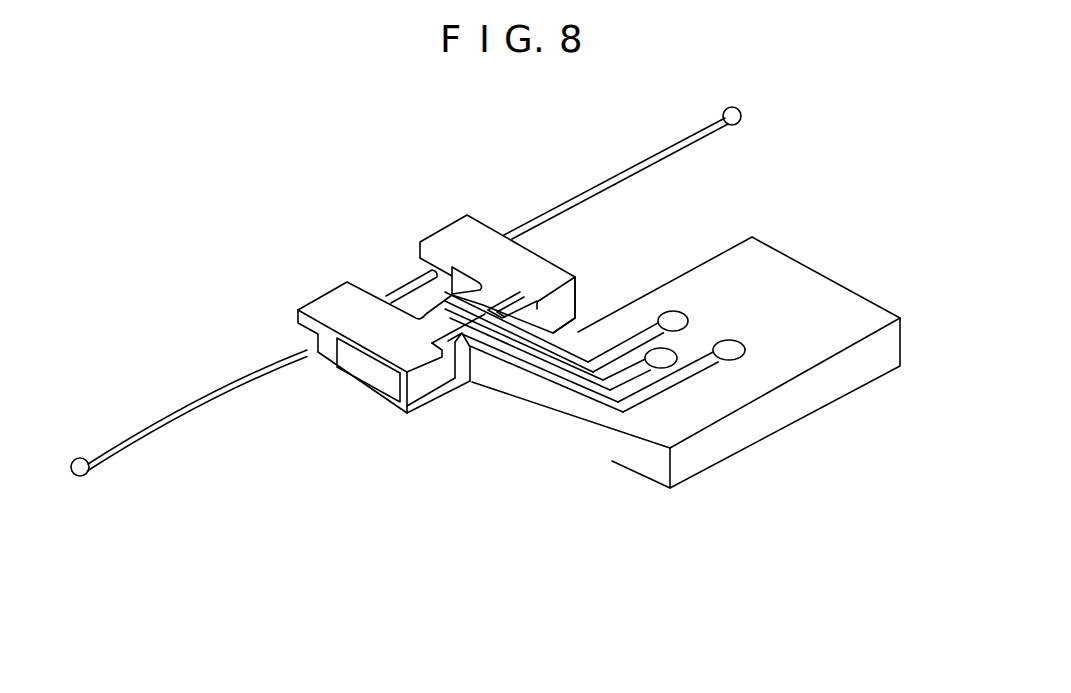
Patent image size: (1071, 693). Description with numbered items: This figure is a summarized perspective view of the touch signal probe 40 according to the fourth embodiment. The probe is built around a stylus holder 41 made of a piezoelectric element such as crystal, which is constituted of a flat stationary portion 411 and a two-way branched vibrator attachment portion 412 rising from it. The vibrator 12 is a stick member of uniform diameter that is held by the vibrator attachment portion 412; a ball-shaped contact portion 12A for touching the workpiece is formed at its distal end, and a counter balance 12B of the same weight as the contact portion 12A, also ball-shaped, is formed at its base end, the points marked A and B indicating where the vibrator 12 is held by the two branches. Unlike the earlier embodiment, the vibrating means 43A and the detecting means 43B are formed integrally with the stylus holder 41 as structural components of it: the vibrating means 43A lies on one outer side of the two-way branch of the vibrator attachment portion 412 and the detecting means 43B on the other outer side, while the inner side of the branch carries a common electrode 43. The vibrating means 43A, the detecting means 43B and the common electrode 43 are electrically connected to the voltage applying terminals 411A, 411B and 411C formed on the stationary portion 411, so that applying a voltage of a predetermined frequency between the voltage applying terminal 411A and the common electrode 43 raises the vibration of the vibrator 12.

The touch signal probe 40 is at (165, 150).
The stylus holder 41 is at (463, 505).
The stationary portion 411 is at (710, 452).
The voltage applying terminal 411A is at (728, 360).
The voltage applying terminal 411B is at (676, 318).
The voltage applying terminal 411C is at (668, 355).
The vibrator attachment portion 412 is at (540, 268).
The common electrode 43 is at (457, 272).
The vibrating means 43A is at (380, 377).
The detecting means 43B is at (562, 310).
The vibrator 12 is at (188, 406).
The contact portion 12A is at (88, 474).
The counter balance 12B is at (740, 125).
The position A is at (317, 340).
The position B is at (428, 270).